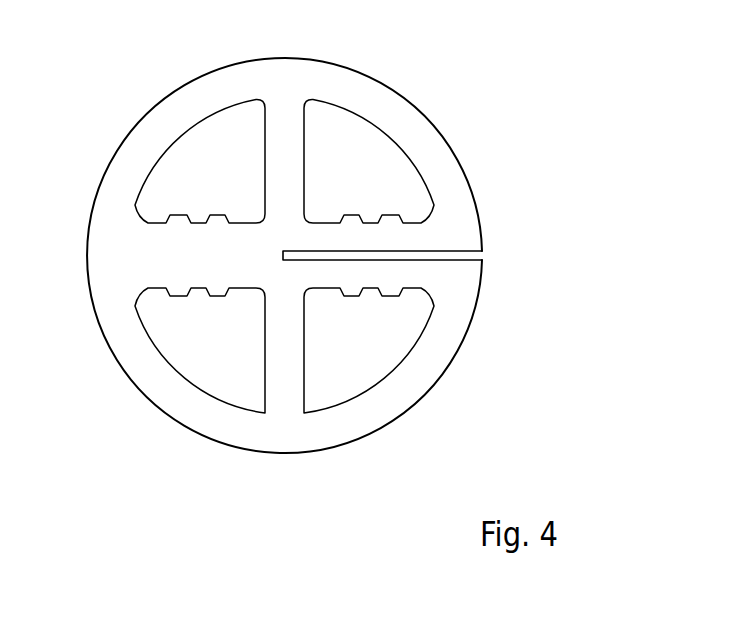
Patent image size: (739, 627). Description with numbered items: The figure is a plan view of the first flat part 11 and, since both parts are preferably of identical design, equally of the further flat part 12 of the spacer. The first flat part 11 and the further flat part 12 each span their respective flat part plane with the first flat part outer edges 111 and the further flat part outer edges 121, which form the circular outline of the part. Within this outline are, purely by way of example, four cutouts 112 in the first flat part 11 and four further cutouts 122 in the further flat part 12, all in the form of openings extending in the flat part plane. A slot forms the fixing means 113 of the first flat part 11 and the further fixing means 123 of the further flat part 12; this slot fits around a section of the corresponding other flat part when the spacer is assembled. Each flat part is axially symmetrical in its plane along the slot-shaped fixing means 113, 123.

The first flat part 11 is at (347, 226).
The further flat part 12 is at (137, 123).
The first flat part outer edges 111 is at (320, 246).
The further flat part outer edges 121 is at (422, 112).
The cutouts 112 is at (284, 206).
The further cutouts 122 is at (232, 130).
The fixing means 113 is at (452, 187).
The further fixing means 123 is at (455, 253).